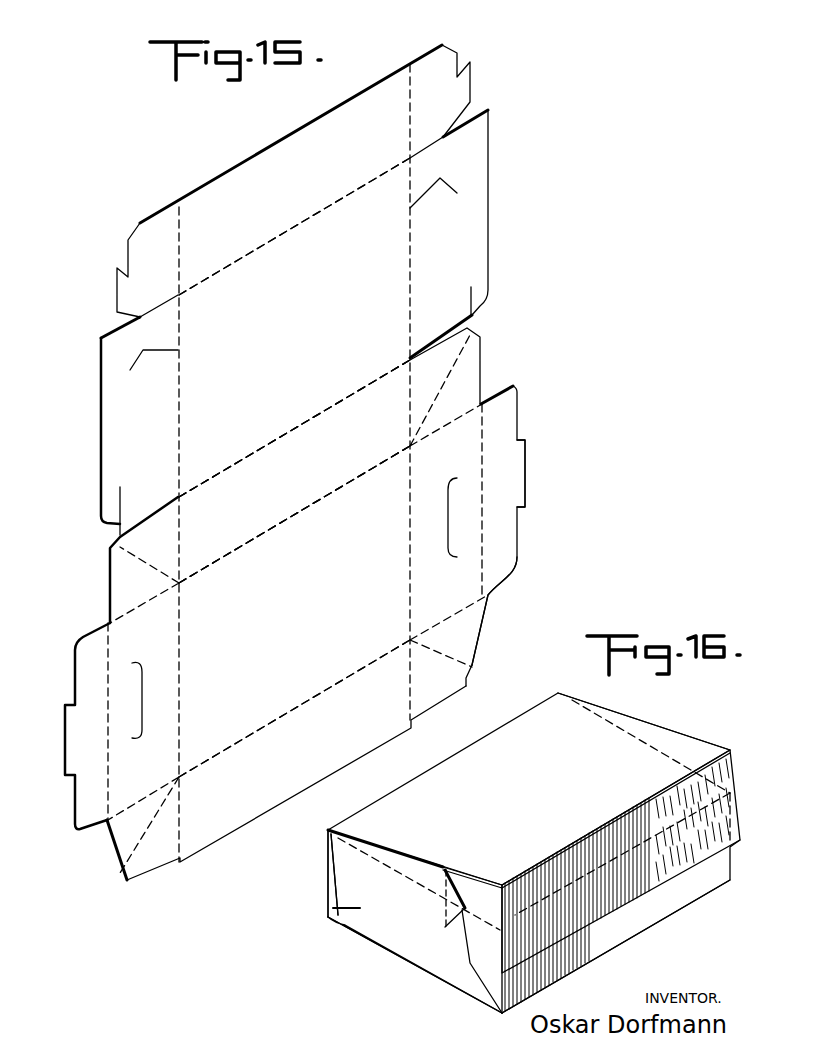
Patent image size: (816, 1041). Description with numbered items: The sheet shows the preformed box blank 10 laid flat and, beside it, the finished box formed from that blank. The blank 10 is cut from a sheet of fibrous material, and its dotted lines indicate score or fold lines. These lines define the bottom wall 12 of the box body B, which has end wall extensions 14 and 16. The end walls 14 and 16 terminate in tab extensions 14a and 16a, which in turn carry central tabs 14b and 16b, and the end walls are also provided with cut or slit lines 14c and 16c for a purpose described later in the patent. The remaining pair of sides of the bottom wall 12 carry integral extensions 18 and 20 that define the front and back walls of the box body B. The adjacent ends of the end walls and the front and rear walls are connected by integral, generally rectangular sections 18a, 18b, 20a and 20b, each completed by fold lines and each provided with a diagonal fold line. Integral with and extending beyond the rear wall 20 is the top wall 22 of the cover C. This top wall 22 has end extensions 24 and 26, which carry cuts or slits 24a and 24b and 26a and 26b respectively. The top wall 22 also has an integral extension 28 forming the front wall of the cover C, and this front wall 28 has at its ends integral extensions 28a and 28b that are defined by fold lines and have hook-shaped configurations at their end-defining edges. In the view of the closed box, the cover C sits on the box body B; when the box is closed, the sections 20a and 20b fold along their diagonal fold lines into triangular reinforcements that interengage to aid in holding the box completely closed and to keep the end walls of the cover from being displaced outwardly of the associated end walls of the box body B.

In FIG. 15, the box blank 10 is at (508, 248).
In FIG. 15, the bottom wall 12 is at (307, 613).
In FIG. 15, the end wall 14 is at (107, 726).
In FIG. 16, the end wall 14 is at (430, 968).
In FIG. 15, the tab extension 14a is at (80, 811).
In FIG. 15, the central tab 14b is at (66, 749).
In FIG. 15, the cut or slit line 14c is at (142, 708).
In FIG. 15, the end wall 16 is at (462, 593).
In FIG. 15, the tab extension 16a is at (505, 575).
In FIG. 15, the central tab 16b is at (525, 476).
In FIG. 15, the cut or slit line 16c is at (448, 510).
In FIG. 15, the front wall 18 is at (310, 760).
In FIG. 16, the front wall 18 is at (643, 918).
In FIG. 15, the corner section 18a is at (142, 872).
In FIG. 15, the corner section 18b is at (467, 675).
In FIG. 15, the rear wall 20 is at (304, 483).
In FIG. 15, the corner section 20a is at (118, 584).
In FIG. 16, the corner section 20a is at (328, 913).
In FIG. 15, the corner section 20b is at (480, 365).
In FIG. 15, the top wall 22 is at (307, 337).
In FIG. 16, the top wall 22 is at (552, 805).
In FIG. 15, the end extension 24 is at (102, 437).
In FIG. 16, the end extension 24 is at (398, 927).
In FIG. 15, the cut or slit 24a is at (143, 350).
In FIG. 16, the cut or slit 24a is at (467, 886).
In FIG. 15, the cut or slit 24b is at (120, 510).
In FIG. 16, the cut or slit 24b is at (333, 908).
In FIG. 15, the end extension 26 is at (488, 213).
In FIG. 15, the cut or slit 26a is at (440, 178).
In FIG. 15, the cut or slit 26b is at (476, 294).
In FIG. 15, the front wall extension 28 is at (302, 193).
In FIG. 16, the front wall extension 28 is at (700, 853).
In FIG. 15, the end extension 28a is at (130, 288).
In FIG. 16, the end extension 28a is at (482, 953).
In FIG. 15, the end extension 28b is at (467, 88).
In FIG. 16, the box body B is at (588, 955).
In FIG. 16, the cover C is at (693, 741).